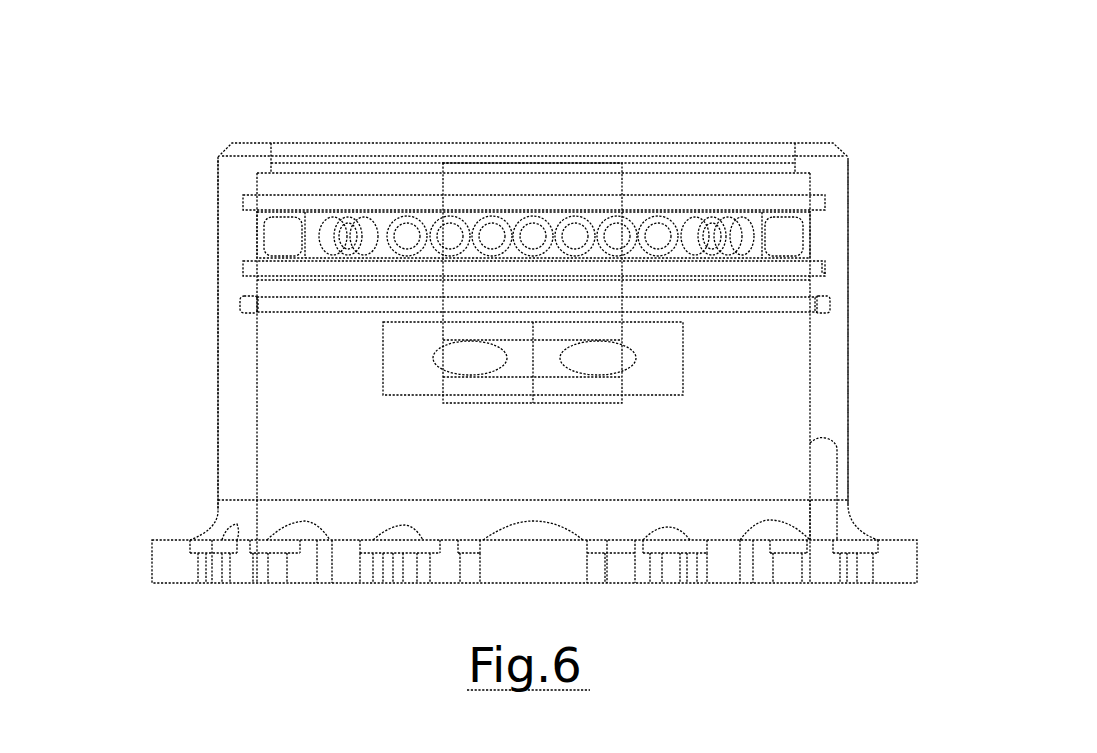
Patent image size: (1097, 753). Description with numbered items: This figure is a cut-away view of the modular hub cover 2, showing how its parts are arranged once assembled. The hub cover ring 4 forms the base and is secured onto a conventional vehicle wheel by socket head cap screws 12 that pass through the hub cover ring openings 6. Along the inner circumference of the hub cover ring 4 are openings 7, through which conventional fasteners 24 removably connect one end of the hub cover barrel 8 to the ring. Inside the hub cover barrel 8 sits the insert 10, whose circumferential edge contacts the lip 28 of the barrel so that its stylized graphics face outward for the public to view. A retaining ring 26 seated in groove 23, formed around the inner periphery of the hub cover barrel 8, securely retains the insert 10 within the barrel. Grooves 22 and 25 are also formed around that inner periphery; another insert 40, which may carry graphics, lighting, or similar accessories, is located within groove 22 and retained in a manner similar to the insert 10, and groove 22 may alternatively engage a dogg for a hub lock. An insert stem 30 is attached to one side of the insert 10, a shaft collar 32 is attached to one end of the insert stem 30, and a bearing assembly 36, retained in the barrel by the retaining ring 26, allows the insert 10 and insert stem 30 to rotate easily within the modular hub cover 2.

The modular hub cover 2 is at (1007, 108).
The hub cover ring 4 is at (918, 562).
The hub cover ring openings 6 is at (397, 602).
The openings 7 is at (863, 592).
The hub cover barrel 8 is at (850, 384).
The insert 10 is at (818, 114).
The socket head cap screws 12 is at (282, 603).
The groove 22 is at (830, 305).
The groove 23 is at (245, 267).
The fasteners 24 is at (831, 598).
The groove 25 is at (826, 198).
The retaining ring 26 is at (826, 272).
The lip 28 is at (267, 149).
The insert stem 30 is at (443, 282).
The shaft collar 32 is at (390, 360).
The bearing assembly 36 is at (195, 202).
The another insert 40 is at (240, 305).